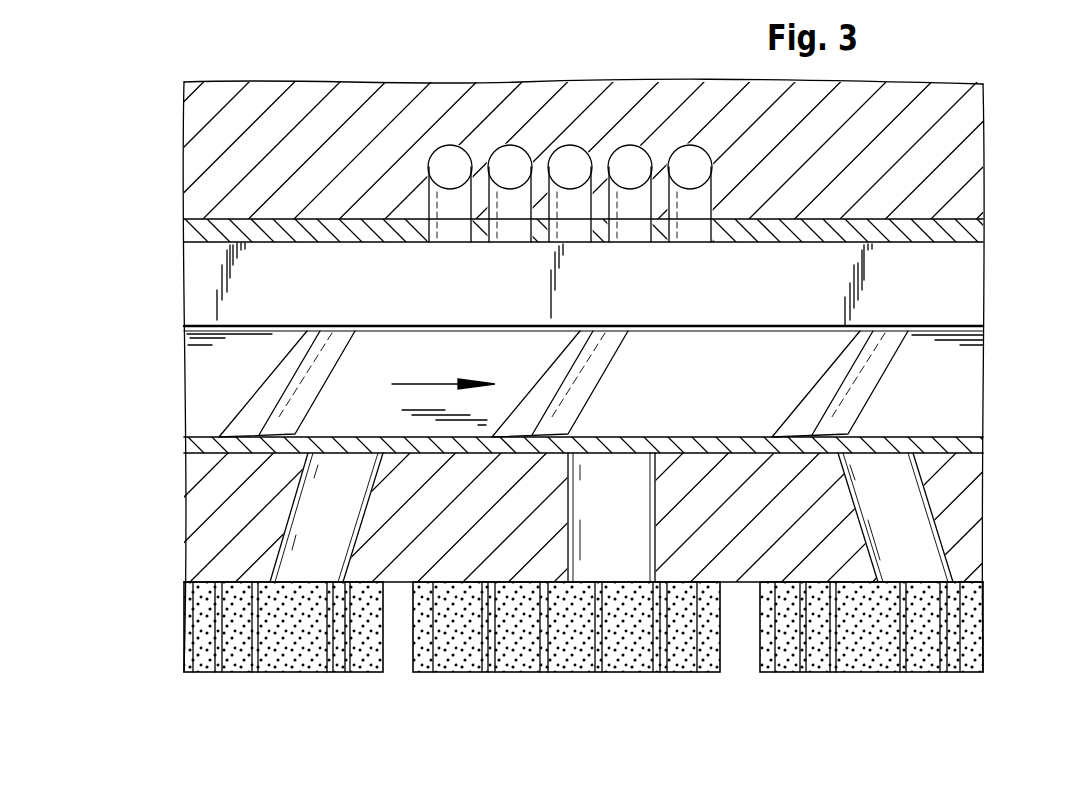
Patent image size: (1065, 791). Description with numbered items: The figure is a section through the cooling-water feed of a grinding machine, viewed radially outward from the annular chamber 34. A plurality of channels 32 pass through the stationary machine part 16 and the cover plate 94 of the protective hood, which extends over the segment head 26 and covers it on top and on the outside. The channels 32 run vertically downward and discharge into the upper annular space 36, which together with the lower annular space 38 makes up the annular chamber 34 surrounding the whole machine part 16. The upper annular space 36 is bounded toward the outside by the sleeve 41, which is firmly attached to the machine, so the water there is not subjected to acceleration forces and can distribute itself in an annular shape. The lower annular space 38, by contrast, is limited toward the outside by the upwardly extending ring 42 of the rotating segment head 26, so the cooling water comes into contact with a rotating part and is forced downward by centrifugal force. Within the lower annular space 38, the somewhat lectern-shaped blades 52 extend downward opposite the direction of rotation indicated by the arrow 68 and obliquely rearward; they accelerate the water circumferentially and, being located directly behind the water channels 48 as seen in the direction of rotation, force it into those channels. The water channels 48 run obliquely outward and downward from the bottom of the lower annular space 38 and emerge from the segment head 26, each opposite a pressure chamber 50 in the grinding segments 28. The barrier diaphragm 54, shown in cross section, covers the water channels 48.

The stationary machine part 16 is at (964, 123).
The channel 32 is at (505, 147).
The cover plate 94 is at (963, 232).
The sleeve 41 is at (958, 294).
The upper annular space 36 is at (774, 289).
The ring 42 is at (962, 362).
The lower annular space 38 is at (772, 370).
The annular chamber 34 is at (202, 347).
The arrow 68 is at (412, 384).
The blades 52 is at (316, 393).
The barrier diaphragm 54 is at (932, 437).
The segment head 26 is at (965, 493).
The water channels 48 is at (346, 514).
The grinding segments 28 is at (185, 650).
The pressure chamber 50 is at (288, 655).